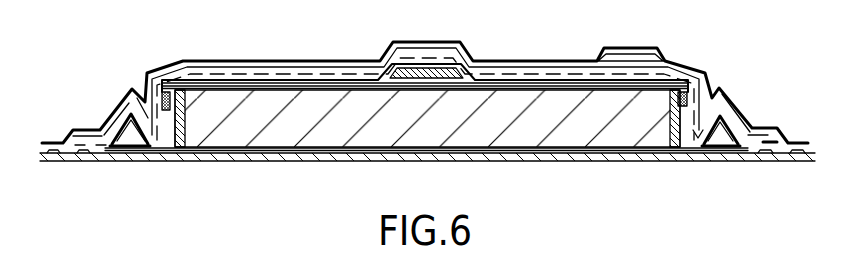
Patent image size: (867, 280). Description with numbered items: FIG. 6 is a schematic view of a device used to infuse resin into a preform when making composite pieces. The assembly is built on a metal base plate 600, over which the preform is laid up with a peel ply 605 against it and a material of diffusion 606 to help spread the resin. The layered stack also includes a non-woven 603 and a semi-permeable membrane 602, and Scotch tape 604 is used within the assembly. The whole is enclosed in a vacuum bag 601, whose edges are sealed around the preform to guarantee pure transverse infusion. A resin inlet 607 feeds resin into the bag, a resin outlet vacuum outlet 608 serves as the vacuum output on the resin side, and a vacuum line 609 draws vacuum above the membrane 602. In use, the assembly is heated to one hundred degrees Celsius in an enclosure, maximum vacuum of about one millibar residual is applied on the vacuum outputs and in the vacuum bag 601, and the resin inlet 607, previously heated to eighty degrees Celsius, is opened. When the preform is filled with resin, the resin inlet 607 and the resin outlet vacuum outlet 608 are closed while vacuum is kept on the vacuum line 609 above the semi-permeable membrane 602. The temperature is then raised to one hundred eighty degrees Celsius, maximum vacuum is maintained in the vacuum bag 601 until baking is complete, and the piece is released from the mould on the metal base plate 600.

The metal base plate 600 is at (670, 156).
The vacuum bag 601 is at (258, 58).
The semi-permeable membrane 602 is at (518, 73).
The non-woven 603 is at (571, 62).
The Scotch tape 604 is at (683, 89).
The peel ply 605 is at (168, 91).
The material of diffusion 606 is at (226, 92).
The resin inlet 607 is at (424, 74).
The resin outlet vacuum outlet 608 is at (724, 136).
The vacuum line 609 is at (652, 56).